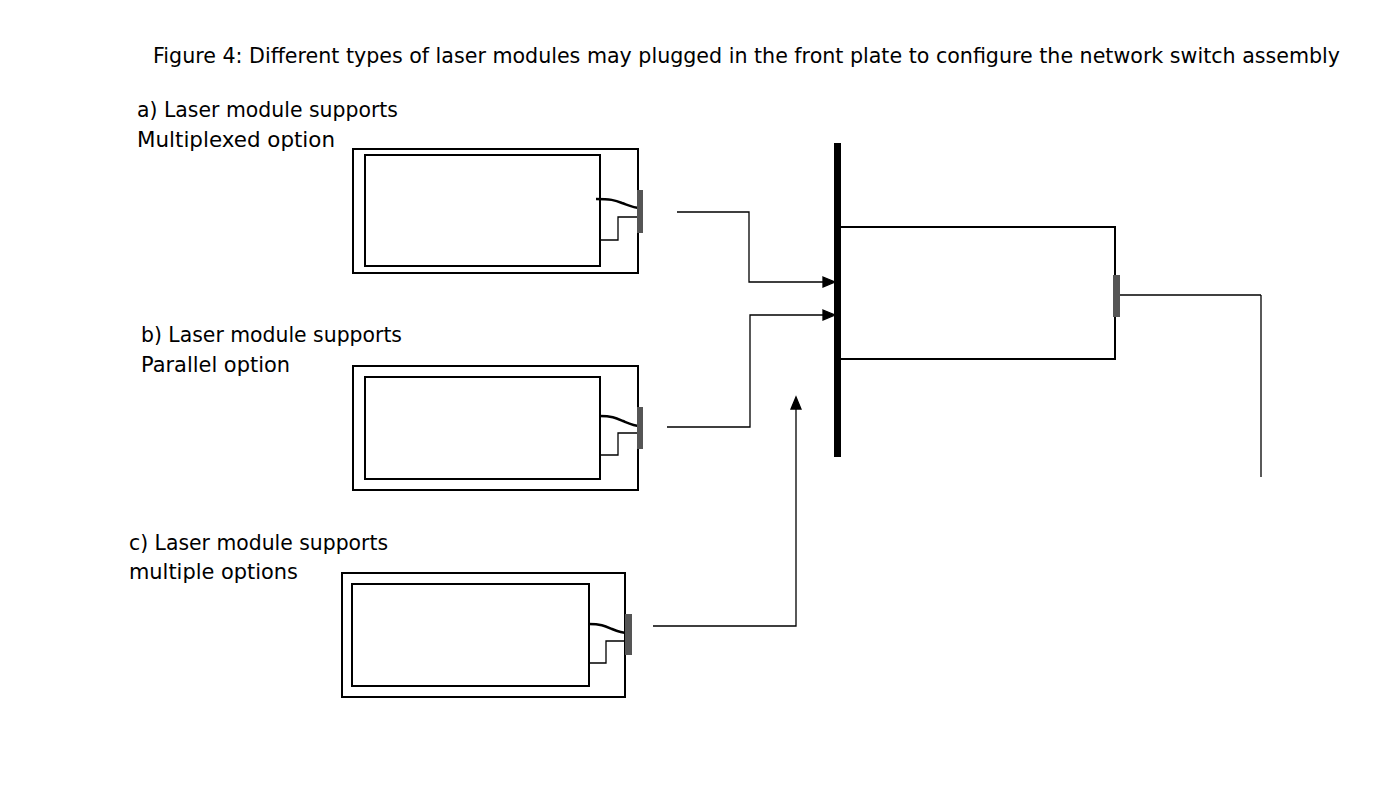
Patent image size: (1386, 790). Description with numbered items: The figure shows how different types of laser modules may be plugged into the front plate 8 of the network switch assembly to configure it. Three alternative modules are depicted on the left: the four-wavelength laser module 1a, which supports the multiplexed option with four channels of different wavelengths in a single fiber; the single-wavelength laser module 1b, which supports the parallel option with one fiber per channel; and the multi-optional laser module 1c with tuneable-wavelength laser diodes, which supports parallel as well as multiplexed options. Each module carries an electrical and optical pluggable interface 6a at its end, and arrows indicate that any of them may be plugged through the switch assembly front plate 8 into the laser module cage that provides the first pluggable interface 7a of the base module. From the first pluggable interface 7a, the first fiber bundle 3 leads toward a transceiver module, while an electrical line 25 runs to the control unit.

The 4 λ laser module 1a is at (597, 149).
The single λ laser module 1b is at (618, 366).
The multi-optional laser module 1c is at (605, 573).
The pluggable interface of the laser module 6a is at (643, 215).
The first pluggable interface of the base module 7a is at (1118, 277).
The switch assembly front plate 8 is at (837, 285).
The first fiber bundle 3 is at (1252, 275).
The electrical line to control unit 25 is at (1261, 370).